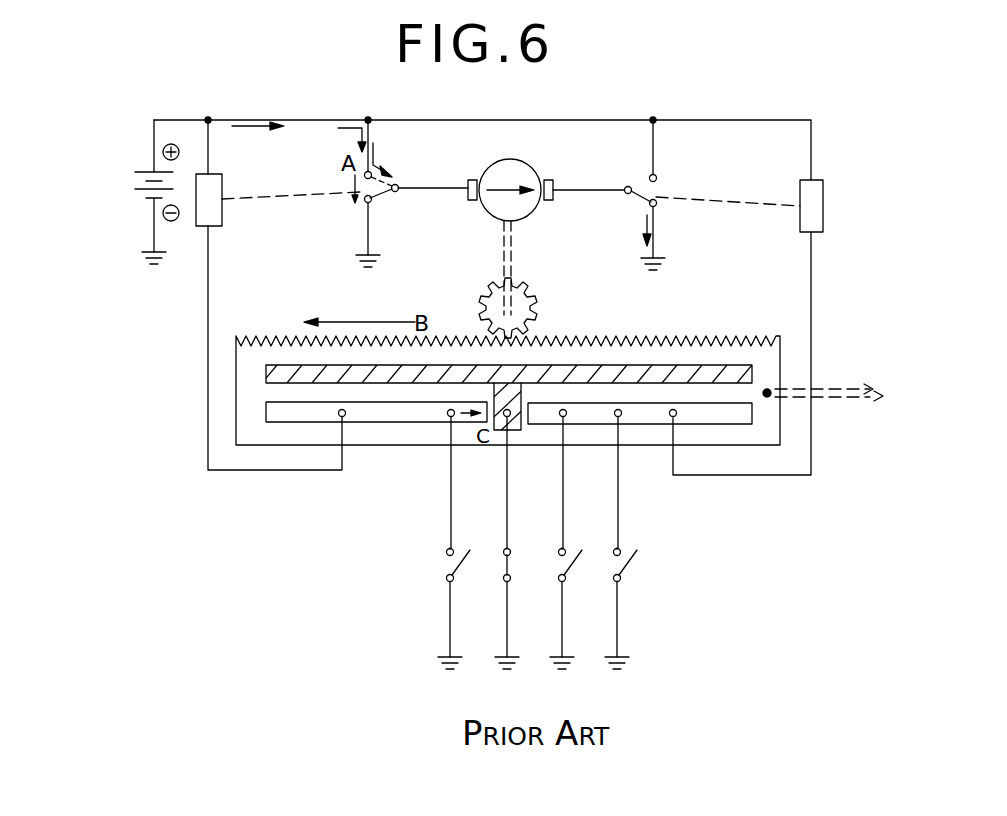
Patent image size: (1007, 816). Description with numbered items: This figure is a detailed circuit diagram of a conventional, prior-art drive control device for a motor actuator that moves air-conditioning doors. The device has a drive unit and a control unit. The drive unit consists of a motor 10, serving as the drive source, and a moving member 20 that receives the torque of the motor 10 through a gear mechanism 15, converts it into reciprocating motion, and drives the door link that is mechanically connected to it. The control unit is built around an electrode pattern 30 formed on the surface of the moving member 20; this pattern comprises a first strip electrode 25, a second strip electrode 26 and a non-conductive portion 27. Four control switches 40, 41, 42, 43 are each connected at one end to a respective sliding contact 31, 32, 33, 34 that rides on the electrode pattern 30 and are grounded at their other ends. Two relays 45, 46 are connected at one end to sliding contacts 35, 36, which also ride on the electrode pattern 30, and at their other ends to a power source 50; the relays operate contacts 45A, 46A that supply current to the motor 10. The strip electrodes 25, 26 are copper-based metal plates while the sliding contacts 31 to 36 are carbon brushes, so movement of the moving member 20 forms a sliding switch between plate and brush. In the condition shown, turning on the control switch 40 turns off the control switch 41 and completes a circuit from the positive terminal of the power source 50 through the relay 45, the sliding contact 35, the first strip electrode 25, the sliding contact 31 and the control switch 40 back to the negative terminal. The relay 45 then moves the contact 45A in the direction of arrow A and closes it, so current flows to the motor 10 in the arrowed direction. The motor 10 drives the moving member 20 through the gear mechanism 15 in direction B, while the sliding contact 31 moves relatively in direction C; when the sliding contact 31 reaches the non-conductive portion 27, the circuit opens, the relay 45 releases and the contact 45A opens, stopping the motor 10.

The motor 10 is at (529, 174).
The gear mechanism 15 is at (536, 293).
The moving member 20 is at (686, 338).
The first strip electrode 25 is at (397, 418).
The second strip electrode 26 is at (741, 418).
The non-conductive portion 27 is at (268, 366).
The electrode pattern 30 is at (768, 374).
The sliding contact 31 is at (455, 417).
The sliding contact 32 is at (510, 419).
The sliding contact 33 is at (566, 419).
The sliding contact 34 is at (621, 419).
The sliding contact 35 is at (340, 417).
The sliding contact 36 is at (676, 419).
The control switch 40 is at (457, 570).
The control switch 41 is at (509, 568).
The control switch 42 is at (569, 570).
The control switch 43 is at (624, 570).
The relay 45 is at (222, 181).
The contact 45A is at (379, 197).
The relay 46 is at (826, 207).
The contact 46A is at (627, 194).
The power source 50 is at (138, 183).